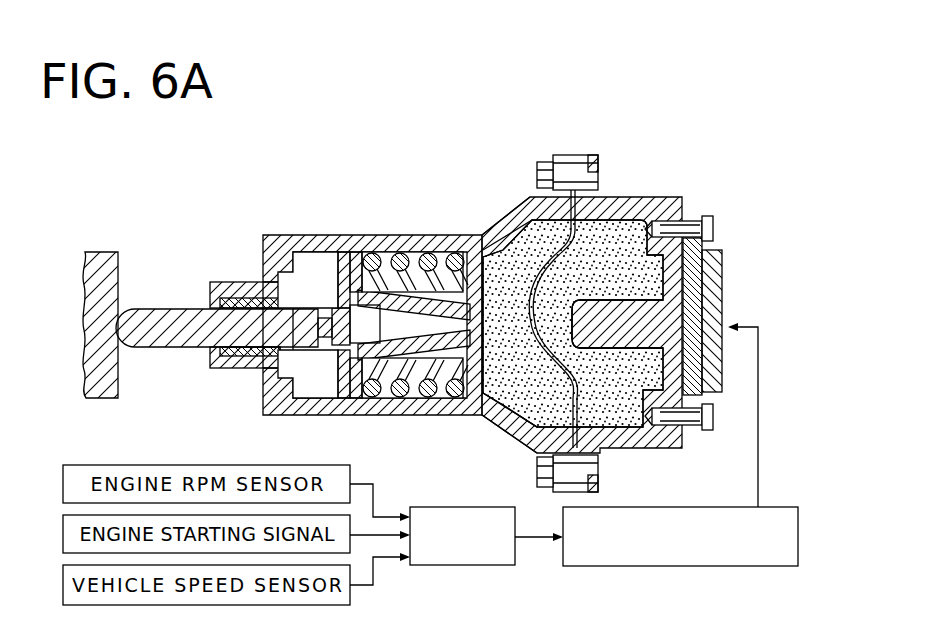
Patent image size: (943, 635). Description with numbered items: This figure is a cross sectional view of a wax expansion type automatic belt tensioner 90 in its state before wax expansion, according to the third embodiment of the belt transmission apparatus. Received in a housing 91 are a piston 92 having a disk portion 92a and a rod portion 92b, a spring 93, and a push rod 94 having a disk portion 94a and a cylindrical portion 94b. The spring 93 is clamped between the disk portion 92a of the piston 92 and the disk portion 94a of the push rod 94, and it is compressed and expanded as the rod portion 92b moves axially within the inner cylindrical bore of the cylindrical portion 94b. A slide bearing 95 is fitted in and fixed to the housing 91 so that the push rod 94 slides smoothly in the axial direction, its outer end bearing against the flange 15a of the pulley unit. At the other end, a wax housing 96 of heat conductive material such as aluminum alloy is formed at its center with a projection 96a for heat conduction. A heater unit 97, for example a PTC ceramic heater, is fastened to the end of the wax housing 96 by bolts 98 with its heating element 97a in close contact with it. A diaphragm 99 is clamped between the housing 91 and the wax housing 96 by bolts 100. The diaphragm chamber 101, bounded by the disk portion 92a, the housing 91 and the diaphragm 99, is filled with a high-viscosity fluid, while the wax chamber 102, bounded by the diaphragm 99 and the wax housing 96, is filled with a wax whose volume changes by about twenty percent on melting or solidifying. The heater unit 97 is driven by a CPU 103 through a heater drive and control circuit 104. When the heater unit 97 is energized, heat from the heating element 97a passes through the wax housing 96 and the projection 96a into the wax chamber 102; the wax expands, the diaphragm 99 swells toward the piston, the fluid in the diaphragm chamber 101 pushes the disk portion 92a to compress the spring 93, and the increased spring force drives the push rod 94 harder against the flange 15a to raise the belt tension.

The flange 15a is at (96, 268).
The automatic belt tensioner 90 is at (452, 287).
The housing 91 is at (421, 236).
The piston 92 is at (490, 235).
The disk portion 92a is at (462, 236).
The rod portion 92b is at (451, 386).
The spring 93 is at (396, 236).
The push rod 94 is at (176, 322).
The disk portion 94a is at (340, 236).
The cylindrical portion 94b is at (414, 372).
The slide bearing 95 is at (246, 300).
The wax housing 96 is at (646, 197).
The projection 96a is at (620, 334).
The heater unit 97 is at (723, 302).
The heating element 97a is at (706, 277).
The bolts 98 is at (714, 228).
The diaphragm 99 is at (600, 262).
The bolts 100 is at (536, 176).
The diaphragm chamber 101 is at (523, 222).
The wax chamber 102 is at (628, 220).
The CPU 103 is at (436, 507).
The heater drive and control circuit 104 is at (722, 507).